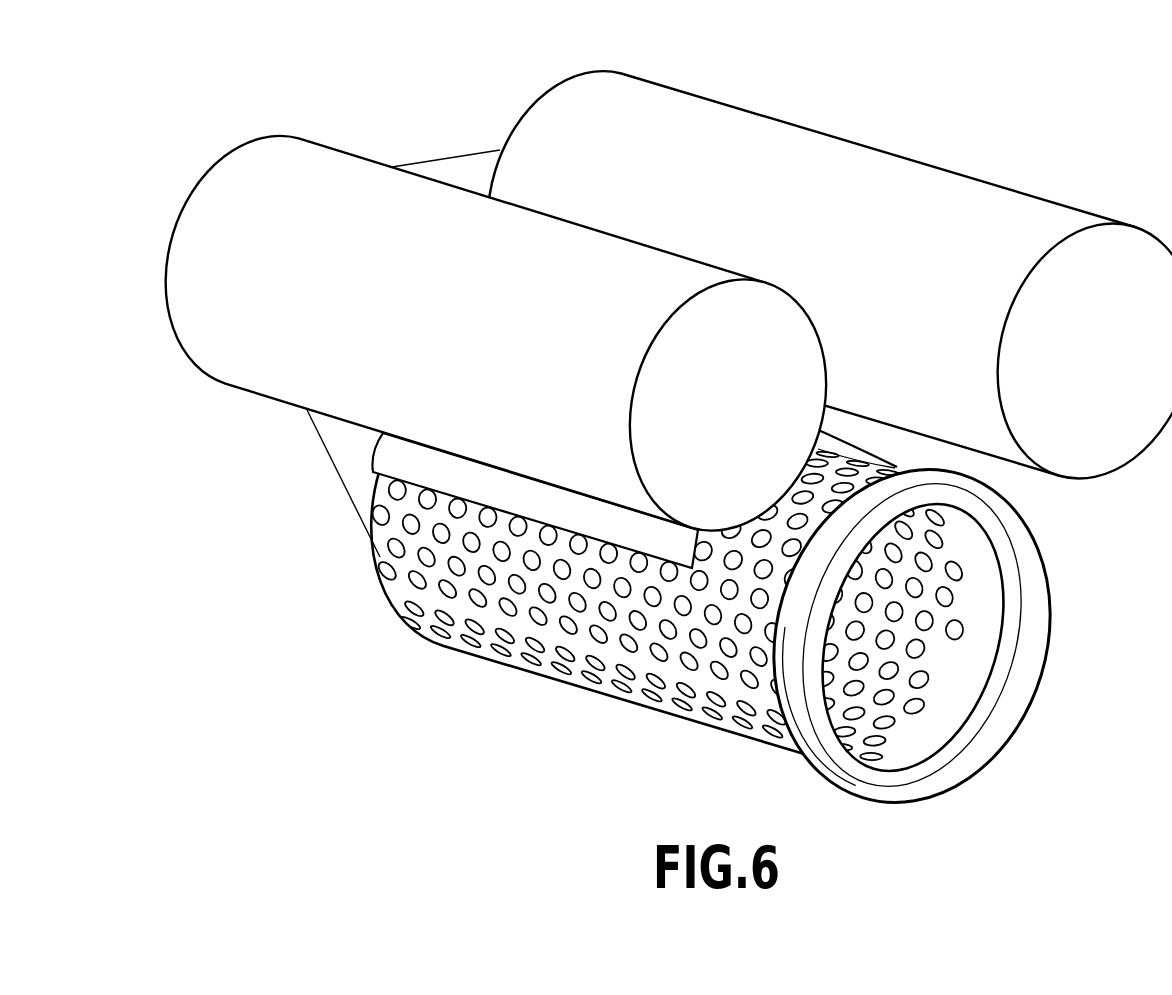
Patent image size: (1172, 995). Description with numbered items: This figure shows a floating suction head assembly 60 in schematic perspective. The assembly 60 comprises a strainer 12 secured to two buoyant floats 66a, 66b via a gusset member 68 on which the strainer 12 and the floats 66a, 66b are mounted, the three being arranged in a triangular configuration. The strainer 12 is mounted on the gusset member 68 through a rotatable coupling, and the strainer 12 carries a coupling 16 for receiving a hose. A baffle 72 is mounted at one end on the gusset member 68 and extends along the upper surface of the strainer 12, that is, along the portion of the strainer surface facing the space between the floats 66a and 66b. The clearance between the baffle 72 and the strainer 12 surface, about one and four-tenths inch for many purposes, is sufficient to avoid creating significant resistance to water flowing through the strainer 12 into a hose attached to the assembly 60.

The strainer 12 is at (638, 710).
The coupling 16 is at (1032, 556).
The floating suction head assembly 60 is at (669, 437).
The buoyant float 66a is at (407, 313).
The buoyant float 66b is at (775, 223).
The gusset member 68 is at (468, 172).
The baffle 72 is at (437, 470).